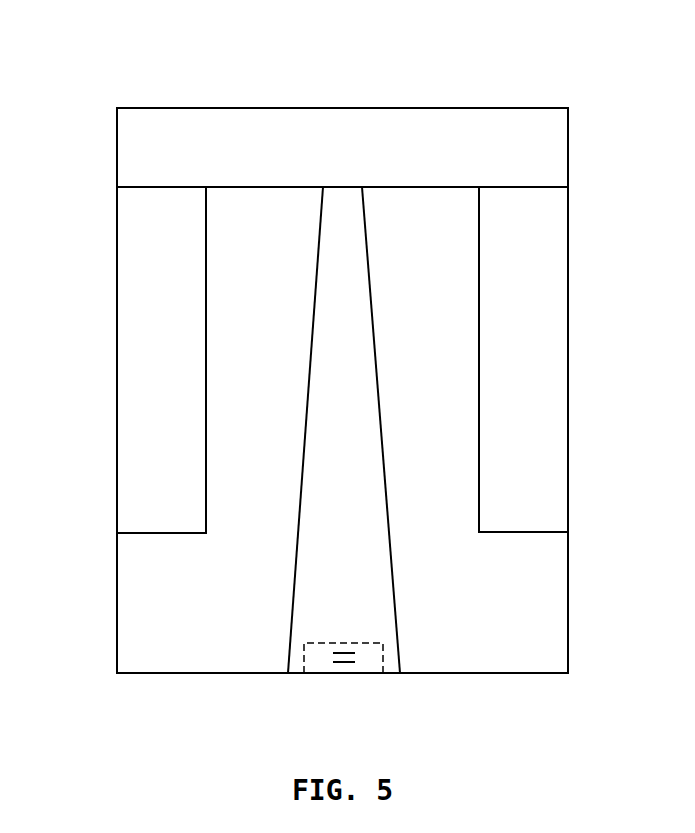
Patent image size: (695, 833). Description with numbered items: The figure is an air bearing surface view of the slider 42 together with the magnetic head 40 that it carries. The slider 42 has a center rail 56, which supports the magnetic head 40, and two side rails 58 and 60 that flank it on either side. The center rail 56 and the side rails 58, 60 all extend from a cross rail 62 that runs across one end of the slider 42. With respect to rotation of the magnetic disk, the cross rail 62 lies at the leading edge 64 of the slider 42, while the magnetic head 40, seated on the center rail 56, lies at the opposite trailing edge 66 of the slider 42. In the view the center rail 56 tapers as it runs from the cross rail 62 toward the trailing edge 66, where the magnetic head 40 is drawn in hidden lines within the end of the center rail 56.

The magnetic head 40 is at (322, 664).
The slider 42 is at (117, 621).
The center rail 56 is at (328, 302).
The side rail 58 is at (133, 270).
The side rail 60 is at (552, 270).
The cross rail 62 is at (263, 118).
The leading edge 64 is at (446, 108).
The trailing edge 66 is at (467, 673).